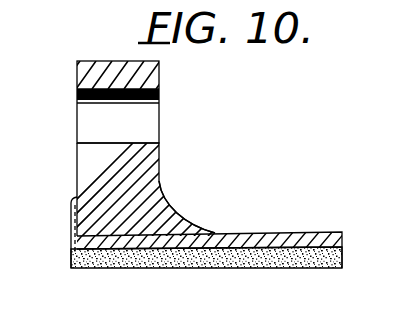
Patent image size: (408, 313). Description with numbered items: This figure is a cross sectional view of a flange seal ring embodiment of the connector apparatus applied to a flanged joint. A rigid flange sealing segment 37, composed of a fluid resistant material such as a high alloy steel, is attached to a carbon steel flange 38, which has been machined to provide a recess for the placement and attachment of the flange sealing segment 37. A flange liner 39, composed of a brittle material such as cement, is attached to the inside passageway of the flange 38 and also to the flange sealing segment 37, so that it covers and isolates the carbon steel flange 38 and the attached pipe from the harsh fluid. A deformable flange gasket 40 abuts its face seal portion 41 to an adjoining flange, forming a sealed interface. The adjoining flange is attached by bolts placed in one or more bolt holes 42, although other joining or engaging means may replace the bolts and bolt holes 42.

The flange sealing segment 37 is at (171, 203).
The carbon steel flange 38 is at (160, 178).
The flange liner 39 is at (236, 268).
The flange gasket 40 is at (70, 200).
The face seal portion 41 is at (70, 253).
The bolt holes 42 is at (160, 123).